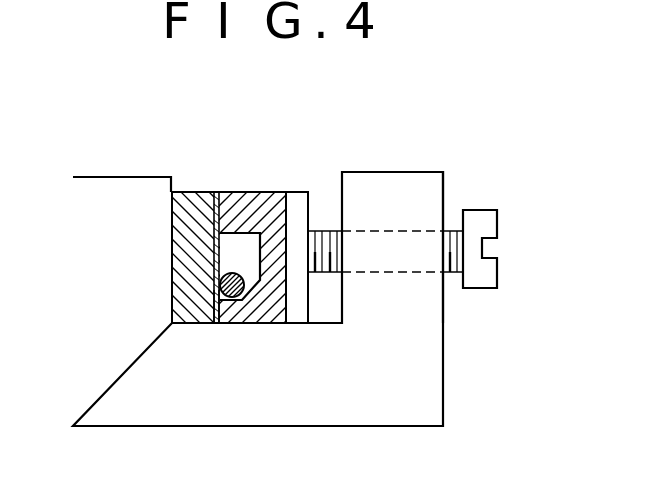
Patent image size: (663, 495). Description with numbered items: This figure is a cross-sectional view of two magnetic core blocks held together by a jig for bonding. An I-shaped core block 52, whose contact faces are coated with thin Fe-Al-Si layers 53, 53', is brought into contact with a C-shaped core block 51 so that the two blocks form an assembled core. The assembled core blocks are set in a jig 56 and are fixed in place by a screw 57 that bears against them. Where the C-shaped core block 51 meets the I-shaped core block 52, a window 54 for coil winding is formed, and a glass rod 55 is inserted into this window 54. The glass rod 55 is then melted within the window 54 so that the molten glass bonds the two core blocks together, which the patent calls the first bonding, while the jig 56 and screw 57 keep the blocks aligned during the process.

The C-shaped core block 51 is at (250, 192).
The I-shaped core block 52 is at (193, 191).
The Fe-Al-Si layer 53 is at (159, 257).
The Fe-Al-Si layer 53' is at (188, 337).
The window 54 is at (222, 256).
The glass rod 55 is at (233, 273).
The jig 56 is at (417, 172).
The screw 57 is at (485, 208).